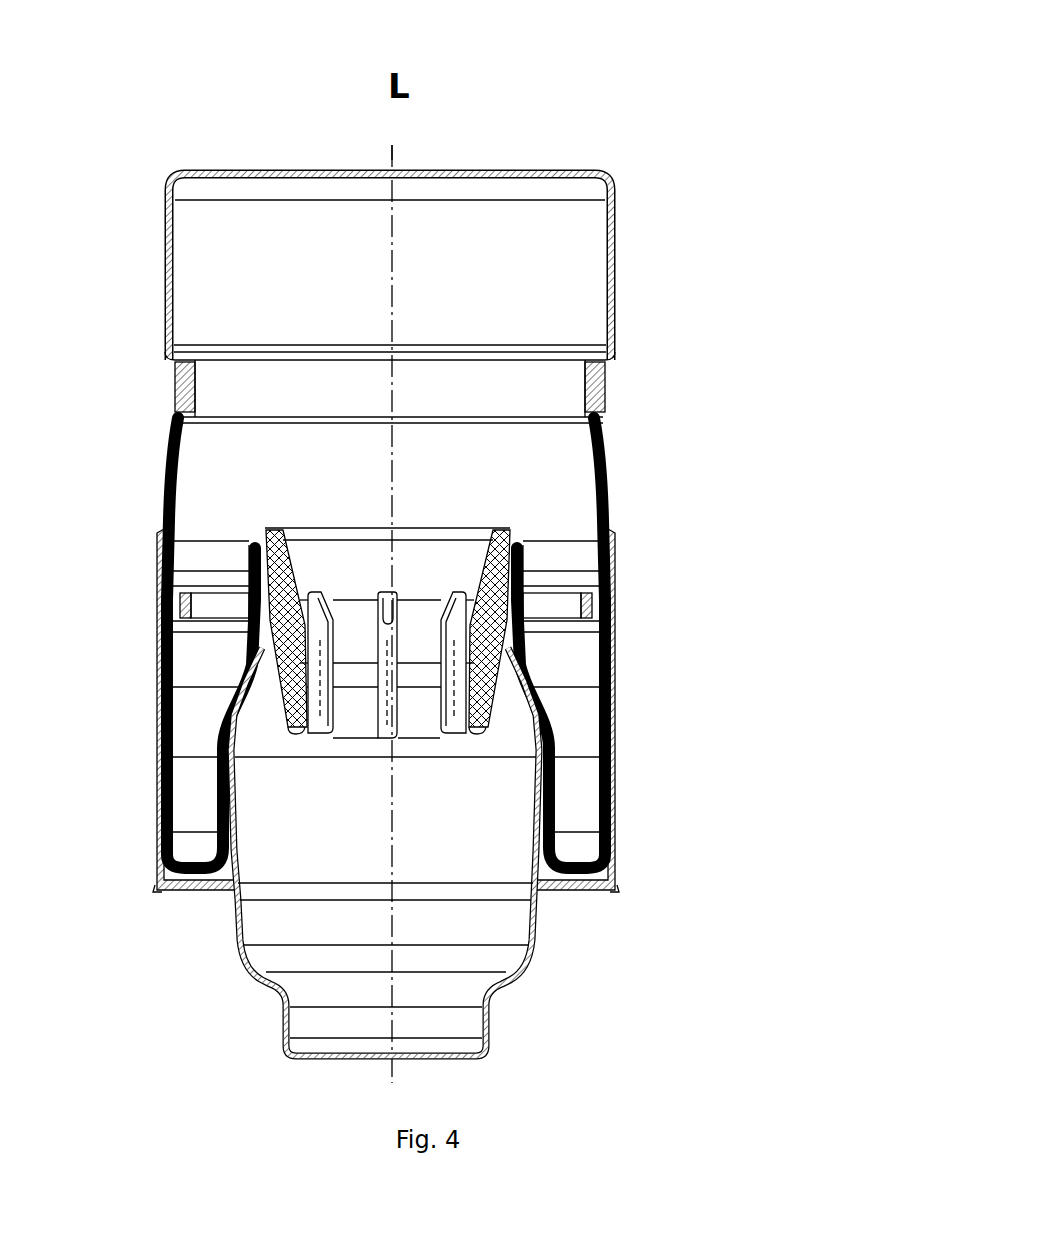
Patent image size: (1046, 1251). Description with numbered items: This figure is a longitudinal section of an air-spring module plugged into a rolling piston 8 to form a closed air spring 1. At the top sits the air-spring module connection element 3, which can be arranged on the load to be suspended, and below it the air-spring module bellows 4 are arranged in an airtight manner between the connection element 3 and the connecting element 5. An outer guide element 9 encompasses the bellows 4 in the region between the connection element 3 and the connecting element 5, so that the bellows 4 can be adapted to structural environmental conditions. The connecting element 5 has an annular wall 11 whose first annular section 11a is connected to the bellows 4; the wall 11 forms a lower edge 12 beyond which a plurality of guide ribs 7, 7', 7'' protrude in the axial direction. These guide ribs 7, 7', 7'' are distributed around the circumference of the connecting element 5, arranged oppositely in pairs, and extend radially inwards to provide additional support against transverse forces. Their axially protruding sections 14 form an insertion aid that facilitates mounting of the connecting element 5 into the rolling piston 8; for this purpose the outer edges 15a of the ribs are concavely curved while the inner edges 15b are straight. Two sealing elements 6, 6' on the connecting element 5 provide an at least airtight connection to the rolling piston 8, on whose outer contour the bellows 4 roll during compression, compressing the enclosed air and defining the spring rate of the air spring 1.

The air spring 1 is at (775, 88).
The air-spring module connection element 3 is at (615, 277).
The air-spring module bellows 4 is at (612, 477).
The connecting element 5 is at (478, 758).
The sealing element 6 is at (468, 702).
The sealing element 6' is at (487, 598).
The guide rib 7 is at (507, 852).
The guide rib 7' is at (595, 818).
The guide rib 7'' is at (219, 773).
The rolling piston 8 is at (528, 1010).
The outer guide element 9 is at (478, 668).
The wall 11 is at (308, 567).
The first annular section 11a is at (243, 566).
The lower edge 12 is at (343, 660).
The axially protruding sections 14 is at (440, 720).
The outer edges 15a is at (282, 704).
The inner edges 15b is at (398, 655).